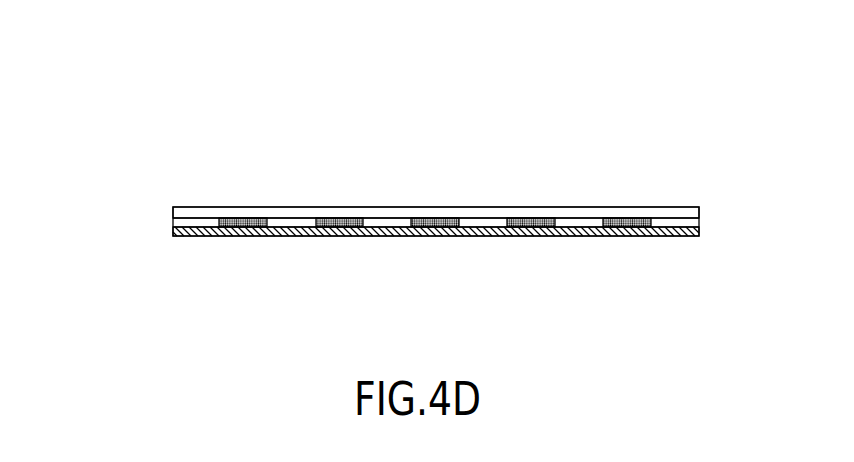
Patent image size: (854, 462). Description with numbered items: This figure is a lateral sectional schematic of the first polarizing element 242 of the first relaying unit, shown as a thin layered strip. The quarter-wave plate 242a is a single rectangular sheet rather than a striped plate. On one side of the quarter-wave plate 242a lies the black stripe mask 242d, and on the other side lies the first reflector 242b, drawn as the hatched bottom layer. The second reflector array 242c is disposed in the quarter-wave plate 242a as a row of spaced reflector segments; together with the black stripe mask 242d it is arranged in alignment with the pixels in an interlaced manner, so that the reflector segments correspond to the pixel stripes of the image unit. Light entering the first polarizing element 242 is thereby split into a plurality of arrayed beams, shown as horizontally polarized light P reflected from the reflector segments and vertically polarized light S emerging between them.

The first polarizing element 242 is at (160, 86).
The quarter-wave plate 242a is at (173, 223).
The first reflector 242b is at (207, 234).
The second reflector array 242c is at (343, 228).
The black stripe mask 242d is at (247, 214).
The p-polarized light P is at (340, 218).
The s-polarized light S is at (580, 225).